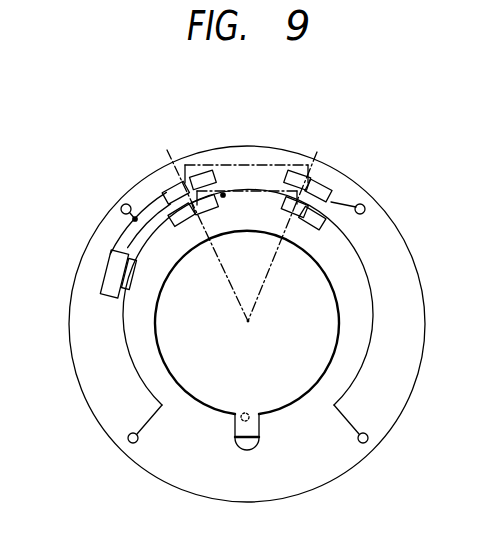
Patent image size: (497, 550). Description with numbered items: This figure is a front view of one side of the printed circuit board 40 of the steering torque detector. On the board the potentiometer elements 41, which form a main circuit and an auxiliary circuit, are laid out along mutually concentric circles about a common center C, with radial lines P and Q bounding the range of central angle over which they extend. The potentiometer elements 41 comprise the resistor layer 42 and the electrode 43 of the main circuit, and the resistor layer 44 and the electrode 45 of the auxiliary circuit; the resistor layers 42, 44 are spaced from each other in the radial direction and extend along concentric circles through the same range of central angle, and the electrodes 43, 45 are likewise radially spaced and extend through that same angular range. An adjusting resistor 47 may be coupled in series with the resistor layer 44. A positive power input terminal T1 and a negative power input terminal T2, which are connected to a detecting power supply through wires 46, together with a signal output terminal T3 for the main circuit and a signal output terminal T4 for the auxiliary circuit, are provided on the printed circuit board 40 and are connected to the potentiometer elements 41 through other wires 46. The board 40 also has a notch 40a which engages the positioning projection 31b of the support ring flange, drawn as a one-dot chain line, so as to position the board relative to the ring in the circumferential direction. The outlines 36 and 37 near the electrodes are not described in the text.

The positioning projection 31b is at (251, 433).
The first magnetic pole 36 is at (238, 163).
The second magnetic pole 37 is at (261, 186).
The printed circuit board 40 is at (82, 395).
The notch 40a is at (237, 416).
The potentiometer elements 41 is at (115, 100).
The resistor layer of the main circuit 42 is at (160, 178).
The electrode of the main circuit 43 is at (190, 154).
The resistor layer of the auxiliary circuit 44 is at (189, 207).
The electrode of the auxiliary circuit 45 is at (284, 211).
The wires 46 is at (132, 247).
The adjusting resistor 47 is at (128, 276).
The positive power input terminal T1 is at (128, 439).
The negative power input terminal T2 is at (121, 209).
The signal output terminal for the main circuit T3 is at (366, 203).
The signal output terminal for the auxiliary circuit T4 is at (368, 438).
The axis P is at (205, 226).
The axis Q is at (291, 226).
The center C is at (256, 320).